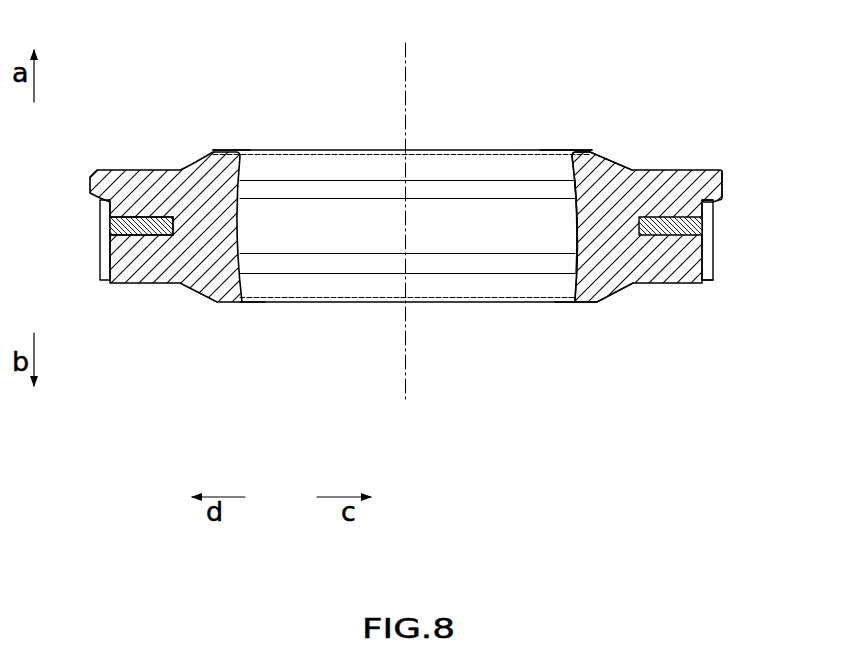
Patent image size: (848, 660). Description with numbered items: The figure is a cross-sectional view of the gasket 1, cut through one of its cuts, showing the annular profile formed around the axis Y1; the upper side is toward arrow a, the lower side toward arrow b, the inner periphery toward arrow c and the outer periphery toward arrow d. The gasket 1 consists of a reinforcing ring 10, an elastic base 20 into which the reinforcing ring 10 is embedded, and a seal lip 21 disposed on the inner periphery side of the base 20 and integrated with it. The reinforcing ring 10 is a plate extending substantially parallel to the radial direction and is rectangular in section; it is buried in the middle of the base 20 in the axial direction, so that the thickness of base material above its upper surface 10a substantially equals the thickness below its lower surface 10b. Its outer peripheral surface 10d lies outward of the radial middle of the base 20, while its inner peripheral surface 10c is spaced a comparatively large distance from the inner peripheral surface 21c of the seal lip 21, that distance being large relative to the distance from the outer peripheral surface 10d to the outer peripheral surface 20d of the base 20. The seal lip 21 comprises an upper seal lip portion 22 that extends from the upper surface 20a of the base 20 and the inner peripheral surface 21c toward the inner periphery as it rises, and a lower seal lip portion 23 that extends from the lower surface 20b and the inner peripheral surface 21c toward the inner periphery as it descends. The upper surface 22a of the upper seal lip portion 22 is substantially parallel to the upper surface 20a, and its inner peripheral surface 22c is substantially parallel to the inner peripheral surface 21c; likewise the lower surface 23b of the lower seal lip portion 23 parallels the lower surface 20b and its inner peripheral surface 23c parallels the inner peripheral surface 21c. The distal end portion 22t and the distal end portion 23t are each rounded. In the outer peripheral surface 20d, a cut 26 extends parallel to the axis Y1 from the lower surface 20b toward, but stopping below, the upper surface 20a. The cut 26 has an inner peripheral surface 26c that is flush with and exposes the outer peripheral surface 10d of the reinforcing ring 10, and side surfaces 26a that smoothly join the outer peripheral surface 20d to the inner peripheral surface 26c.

The gasket 1 is at (754, 97).
The reinforcing ring 10 is at (680, 204).
The upper surface of reinforcing ring 10a is at (164, 219).
The lower surface of reinforcing ring 10b is at (152, 237).
The inner peripheral surface of reinforcing ring 10c is at (175, 227).
The outer peripheral surface of reinforcing ring 10d is at (158, 216).
The base 20 is at (681, 270).
The upper surface of base 20a is at (646, 162).
The lower surface of base 20b is at (648, 286).
The outer peripheral surface of base 20d is at (713, 185).
The seal lip 21 is at (596, 229).
The inner peripheral surface of seal lip 21c is at (605, 231).
The upper seal lip portion 22 is at (633, 141).
The upper surface of upper seal lip portion 22a is at (589, 150).
The inner peripheral surface of upper seal lip portion 22c is at (549, 157).
The distal end portion of upper seal lip portion 22t is at (241, 151).
The lower seal lip portion 23 is at (637, 311).
The lower surface of lower seal lip portion 23b is at (589, 304).
The inner peripheral surface of lower seal lip portion 23c is at (568, 291).
The distal end portion of lower seal lip portion 23t is at (256, 303).
The cut 26 is at (726, 236).
The side surface of cut 26a is at (708, 262).
The inner peripheral surface of cut 26c is at (714, 204).
The axis Y1 is at (408, 57).